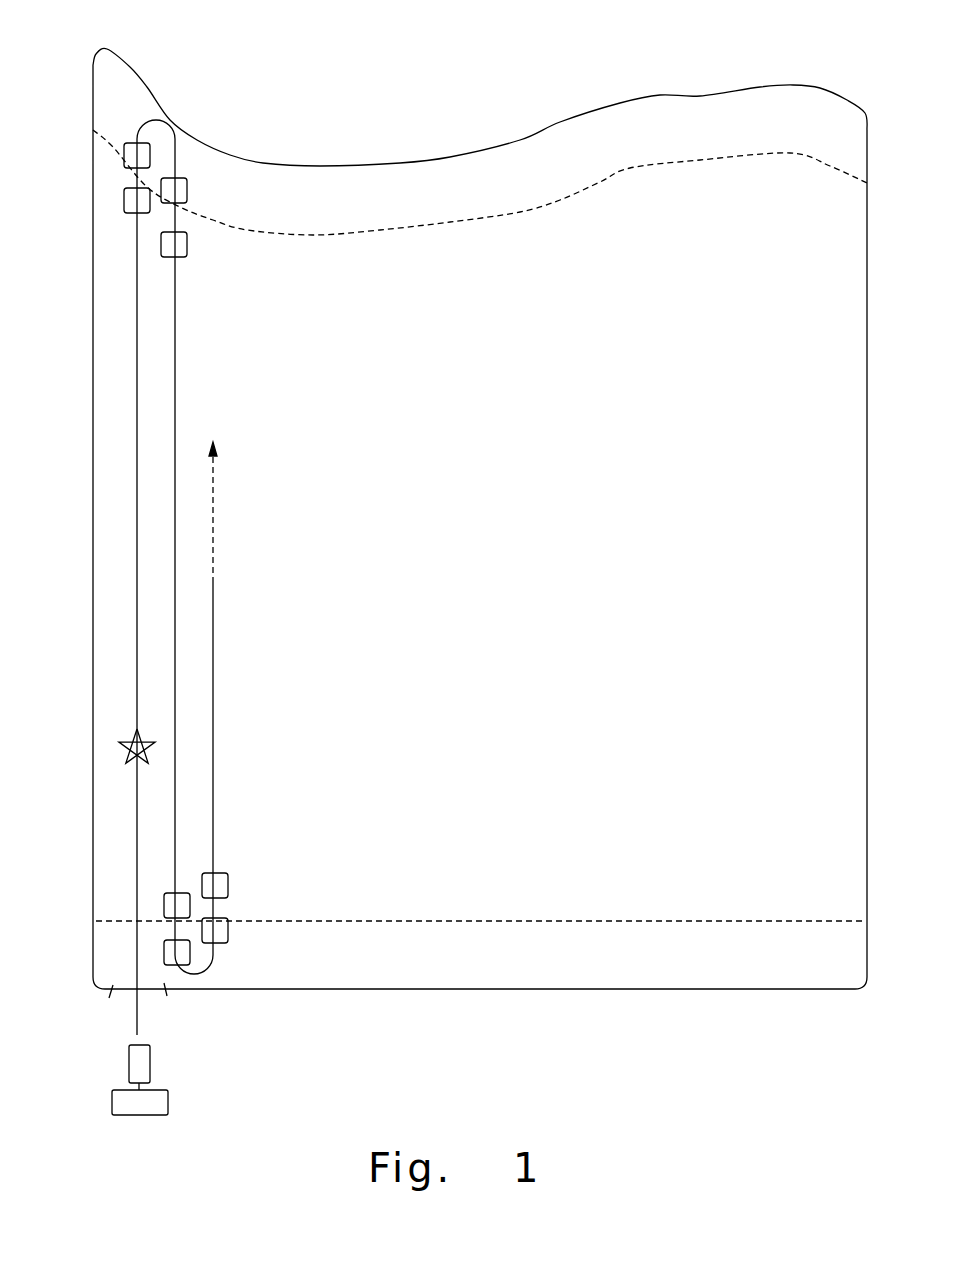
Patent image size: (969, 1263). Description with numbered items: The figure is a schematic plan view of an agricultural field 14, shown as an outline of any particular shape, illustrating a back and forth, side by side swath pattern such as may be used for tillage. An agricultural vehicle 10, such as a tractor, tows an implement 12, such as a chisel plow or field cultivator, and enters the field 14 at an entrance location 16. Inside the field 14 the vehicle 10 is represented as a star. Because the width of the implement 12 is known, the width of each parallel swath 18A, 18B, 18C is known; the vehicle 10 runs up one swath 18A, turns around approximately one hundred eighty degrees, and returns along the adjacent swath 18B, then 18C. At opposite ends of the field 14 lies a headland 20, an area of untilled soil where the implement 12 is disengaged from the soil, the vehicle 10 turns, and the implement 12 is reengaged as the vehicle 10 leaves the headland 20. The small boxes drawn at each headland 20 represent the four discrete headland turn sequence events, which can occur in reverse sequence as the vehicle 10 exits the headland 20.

The field 14 is at (690, 95).
The headland 20 is at (446, 205).
The parallel swath 18A is at (137, 303).
The parallel swath 18B is at (176, 345).
The parallel swath 18C is at (215, 650).
The entrance location 16 is at (157, 1000).
The agricultural vehicle 10 is at (128, 1063).
The implement 12 is at (112, 1105).